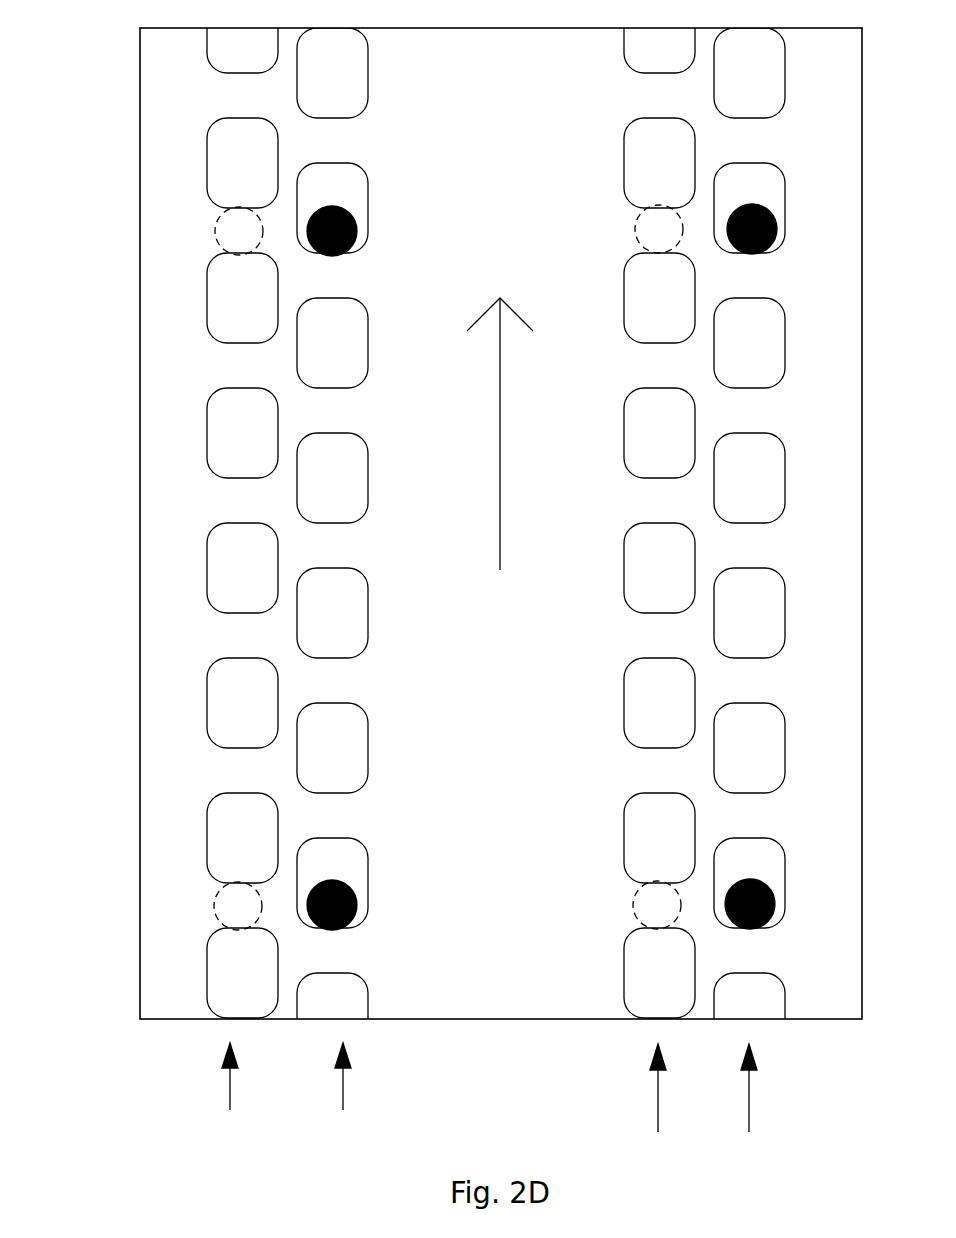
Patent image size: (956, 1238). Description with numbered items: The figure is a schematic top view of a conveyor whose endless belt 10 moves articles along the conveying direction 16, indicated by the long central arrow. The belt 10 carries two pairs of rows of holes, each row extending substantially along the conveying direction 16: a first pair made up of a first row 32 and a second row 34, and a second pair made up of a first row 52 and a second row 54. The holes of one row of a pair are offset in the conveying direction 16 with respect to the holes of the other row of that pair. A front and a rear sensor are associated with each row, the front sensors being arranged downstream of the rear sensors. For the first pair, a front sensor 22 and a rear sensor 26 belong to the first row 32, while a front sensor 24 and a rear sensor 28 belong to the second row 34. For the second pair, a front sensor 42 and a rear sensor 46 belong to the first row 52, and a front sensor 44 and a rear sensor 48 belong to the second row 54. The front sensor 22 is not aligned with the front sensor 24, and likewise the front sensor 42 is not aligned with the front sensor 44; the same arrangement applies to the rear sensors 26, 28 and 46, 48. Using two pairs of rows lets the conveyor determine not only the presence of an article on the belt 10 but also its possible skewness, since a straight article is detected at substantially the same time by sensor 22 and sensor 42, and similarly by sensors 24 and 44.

The belt 10 is at (187, 523).
The conveying direction 16 is at (500, 415).
The front sensor 22 is at (240, 232).
The front sensor 24 is at (360, 239).
The rear sensor 26 is at (238, 907).
The rear sensor 28 is at (357, 913).
The first row of holes 32 is at (230, 1097).
The second row of holes 34 is at (338, 1094).
The front sensor 42 is at (658, 228).
The front sensor 44 is at (780, 237).
The rear sensor 46 is at (658, 905).
The rear sensor 48 is at (777, 913).
The first row of holes 52 is at (661, 1112).
The second row of holes 54 is at (747, 1112).